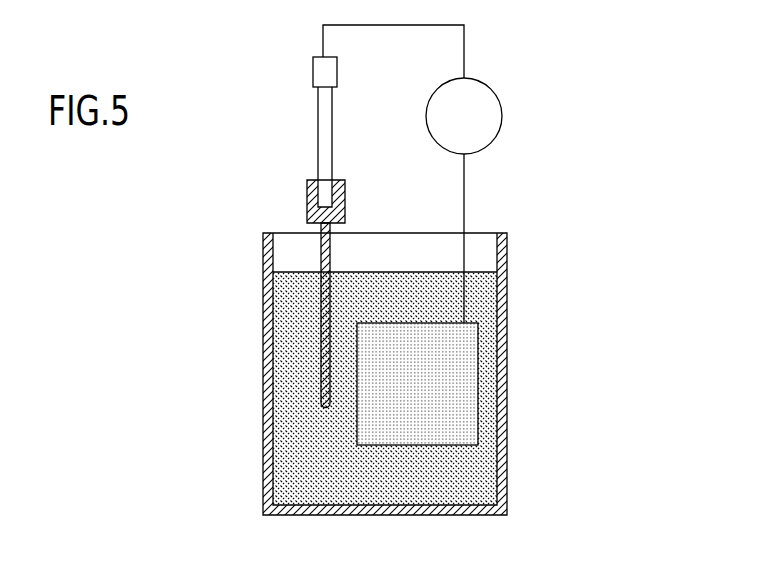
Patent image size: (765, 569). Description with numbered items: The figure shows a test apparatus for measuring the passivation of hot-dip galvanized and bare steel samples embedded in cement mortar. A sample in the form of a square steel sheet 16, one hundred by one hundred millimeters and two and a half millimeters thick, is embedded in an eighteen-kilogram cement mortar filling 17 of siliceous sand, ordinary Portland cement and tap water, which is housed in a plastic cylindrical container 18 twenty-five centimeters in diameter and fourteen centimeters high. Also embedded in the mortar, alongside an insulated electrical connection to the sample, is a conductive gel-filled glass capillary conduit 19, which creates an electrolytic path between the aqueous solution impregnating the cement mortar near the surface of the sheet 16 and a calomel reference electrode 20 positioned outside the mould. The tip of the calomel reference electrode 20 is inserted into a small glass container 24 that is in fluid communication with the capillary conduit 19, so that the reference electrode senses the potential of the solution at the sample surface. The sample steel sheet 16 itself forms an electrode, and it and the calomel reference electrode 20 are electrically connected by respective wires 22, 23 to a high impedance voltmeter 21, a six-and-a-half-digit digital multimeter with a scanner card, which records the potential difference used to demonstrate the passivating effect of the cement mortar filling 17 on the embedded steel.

The sheet 16 is at (463, 367).
The cement mortar filling 17 is at (500, 271).
The plastic cylindrical container 18 is at (264, 384).
The conductive gel-filled glass capillary conduit 19 is at (322, 259).
The calomel reference electrode 20 is at (323, 127).
The high impedance voltmeter 21 is at (475, 129).
The wire 22 is at (464, 46).
The wire 23 is at (465, 198).
The small glass container 24 is at (307, 194).